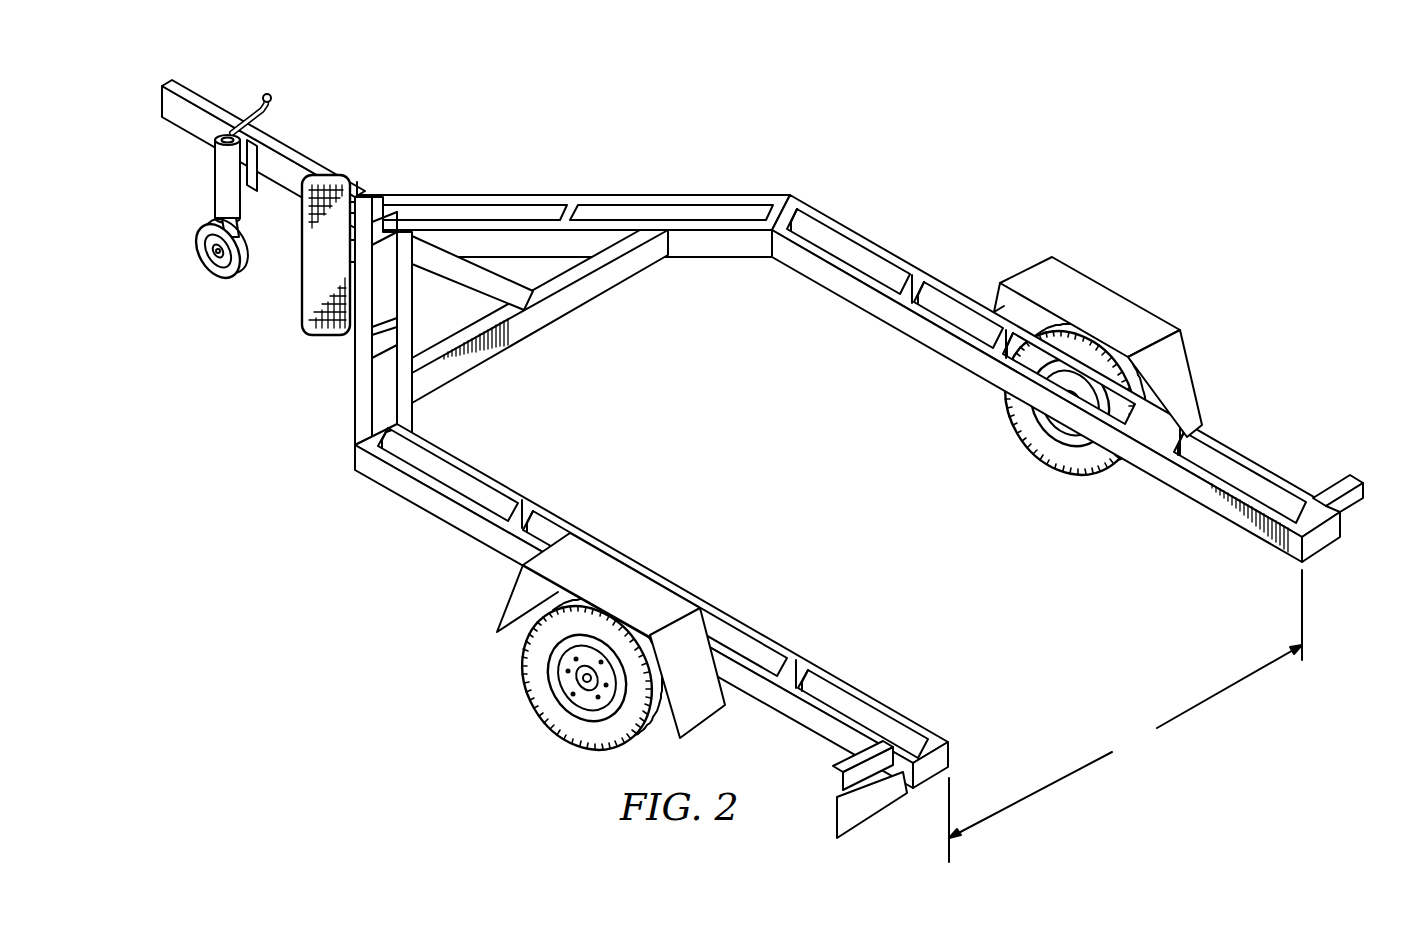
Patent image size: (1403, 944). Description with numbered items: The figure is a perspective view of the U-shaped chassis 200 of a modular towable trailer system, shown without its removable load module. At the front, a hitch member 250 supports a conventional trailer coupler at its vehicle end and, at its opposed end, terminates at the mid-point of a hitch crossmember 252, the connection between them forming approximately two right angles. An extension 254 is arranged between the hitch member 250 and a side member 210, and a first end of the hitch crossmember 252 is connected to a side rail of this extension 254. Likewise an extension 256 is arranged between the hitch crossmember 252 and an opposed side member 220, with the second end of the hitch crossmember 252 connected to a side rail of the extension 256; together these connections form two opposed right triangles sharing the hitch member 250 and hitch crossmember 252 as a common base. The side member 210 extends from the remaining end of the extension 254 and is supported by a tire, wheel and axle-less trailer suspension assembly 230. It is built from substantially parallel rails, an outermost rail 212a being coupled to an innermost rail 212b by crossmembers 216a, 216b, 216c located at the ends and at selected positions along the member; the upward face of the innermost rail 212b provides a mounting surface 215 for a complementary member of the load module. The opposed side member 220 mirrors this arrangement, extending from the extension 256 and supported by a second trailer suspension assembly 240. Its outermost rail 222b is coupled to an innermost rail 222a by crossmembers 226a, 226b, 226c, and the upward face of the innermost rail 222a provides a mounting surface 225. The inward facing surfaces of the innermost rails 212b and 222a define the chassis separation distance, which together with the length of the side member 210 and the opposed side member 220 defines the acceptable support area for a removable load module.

The U-shaped chassis 200 is at (762, 462).
The side member 210 is at (678, 606).
The outermost rail 212a is at (818, 705).
The innermost rail 212b is at (855, 693).
The mounting surface 215 is at (678, 606).
The crossmember 216a is at (490, 508).
The crossmember 216b is at (791, 673).
The crossmember 216c is at (920, 750).
The opposed side member 220 is at (1066, 375).
The innermost rail 222a is at (1163, 470).
The outermost rail 222b is at (810, 213).
The mounting surface 225 is at (950, 340).
The crossmember 226a is at (882, 278).
The crossmember 226b is at (1194, 436).
The crossmember 226c is at (1293, 538).
The trailer suspension assembly 230 is at (500, 690).
The trailer suspension assembly 240 is at (1154, 292).
The hitch member 250 is at (203, 93).
The hitch crossmember 252 is at (568, 282).
The extension 254 is at (337, 396).
The extension 256 is at (618, 186).